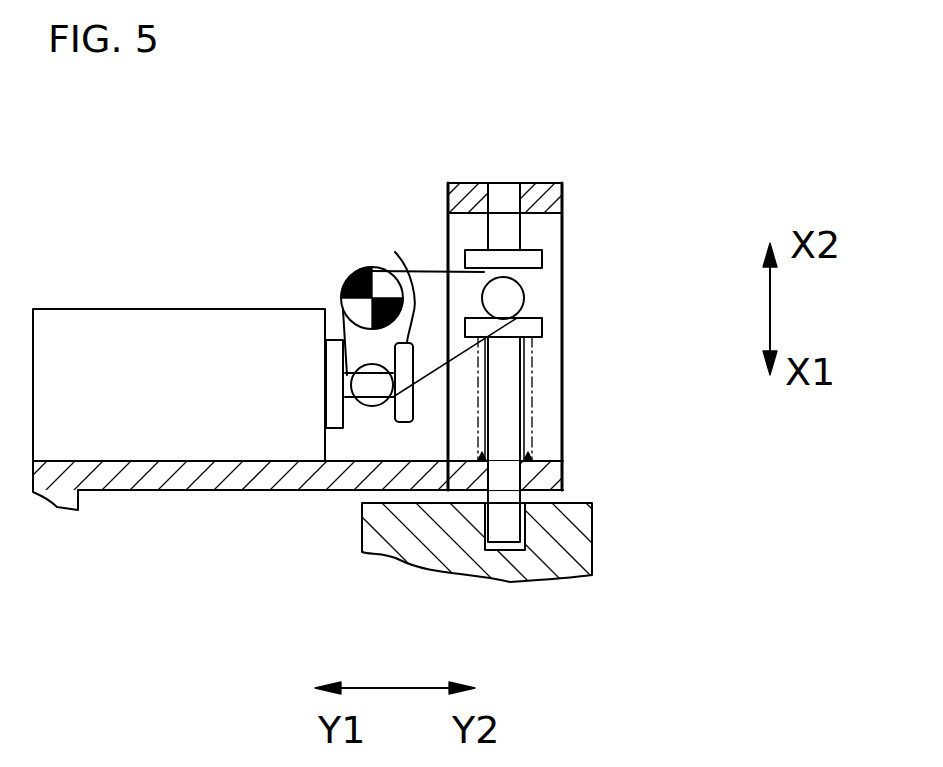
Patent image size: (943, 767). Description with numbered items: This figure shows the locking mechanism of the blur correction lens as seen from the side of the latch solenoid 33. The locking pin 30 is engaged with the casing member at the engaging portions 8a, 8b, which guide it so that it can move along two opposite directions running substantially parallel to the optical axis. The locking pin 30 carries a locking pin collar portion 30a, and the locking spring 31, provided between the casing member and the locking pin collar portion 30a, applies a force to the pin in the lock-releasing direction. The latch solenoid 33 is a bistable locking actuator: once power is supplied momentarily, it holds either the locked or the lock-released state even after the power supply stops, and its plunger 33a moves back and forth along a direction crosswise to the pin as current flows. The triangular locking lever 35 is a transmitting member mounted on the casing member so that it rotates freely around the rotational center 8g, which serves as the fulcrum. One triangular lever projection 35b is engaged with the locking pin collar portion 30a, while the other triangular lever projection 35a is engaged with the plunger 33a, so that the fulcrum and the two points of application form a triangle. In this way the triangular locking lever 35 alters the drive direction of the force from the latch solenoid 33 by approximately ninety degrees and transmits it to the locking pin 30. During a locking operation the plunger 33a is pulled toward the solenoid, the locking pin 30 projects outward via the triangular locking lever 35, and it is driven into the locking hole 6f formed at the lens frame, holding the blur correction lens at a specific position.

The locking pin 30 is at (505, 193).
The locking pin collar portion 30a is at (540, 328).
The locking spring 31 is at (533, 388).
The latch solenoid 33 is at (120, 338).
The plunger 33a is at (395, 254).
The triangular locking lever 35 is at (427, 283).
The triangular lever projection 35a is at (368, 405).
The triangular lever projection 35b is at (503, 300).
The engaging portion 8a is at (555, 205).
The engaging portion 8b is at (550, 477).
The rotational center 8g is at (345, 267).
The locking hole 6f is at (567, 530).